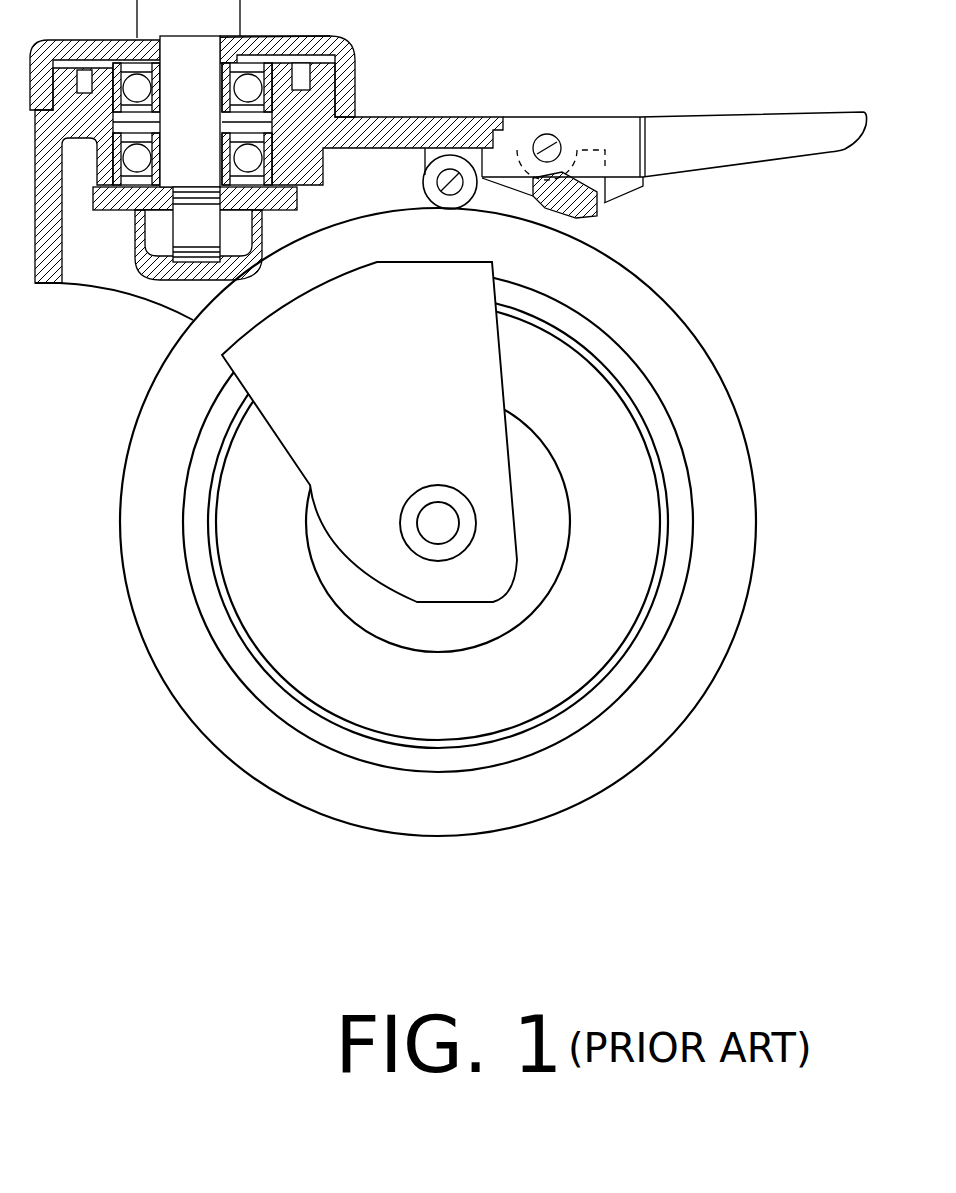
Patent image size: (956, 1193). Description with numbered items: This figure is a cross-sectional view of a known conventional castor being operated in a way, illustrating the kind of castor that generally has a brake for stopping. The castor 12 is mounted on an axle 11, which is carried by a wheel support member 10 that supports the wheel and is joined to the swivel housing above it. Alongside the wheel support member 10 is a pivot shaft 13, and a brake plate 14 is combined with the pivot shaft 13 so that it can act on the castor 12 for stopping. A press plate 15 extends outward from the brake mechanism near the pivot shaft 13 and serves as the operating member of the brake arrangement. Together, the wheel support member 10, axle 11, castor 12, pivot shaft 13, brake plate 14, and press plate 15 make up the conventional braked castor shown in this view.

The wheel support member 10 is at (470, 375).
The axle 11 is at (457, 532).
The castor 12 is at (720, 462).
The pivot shaft 13 is at (453, 177).
The brake plate 14 is at (600, 212).
The press plate 15 is at (762, 112).